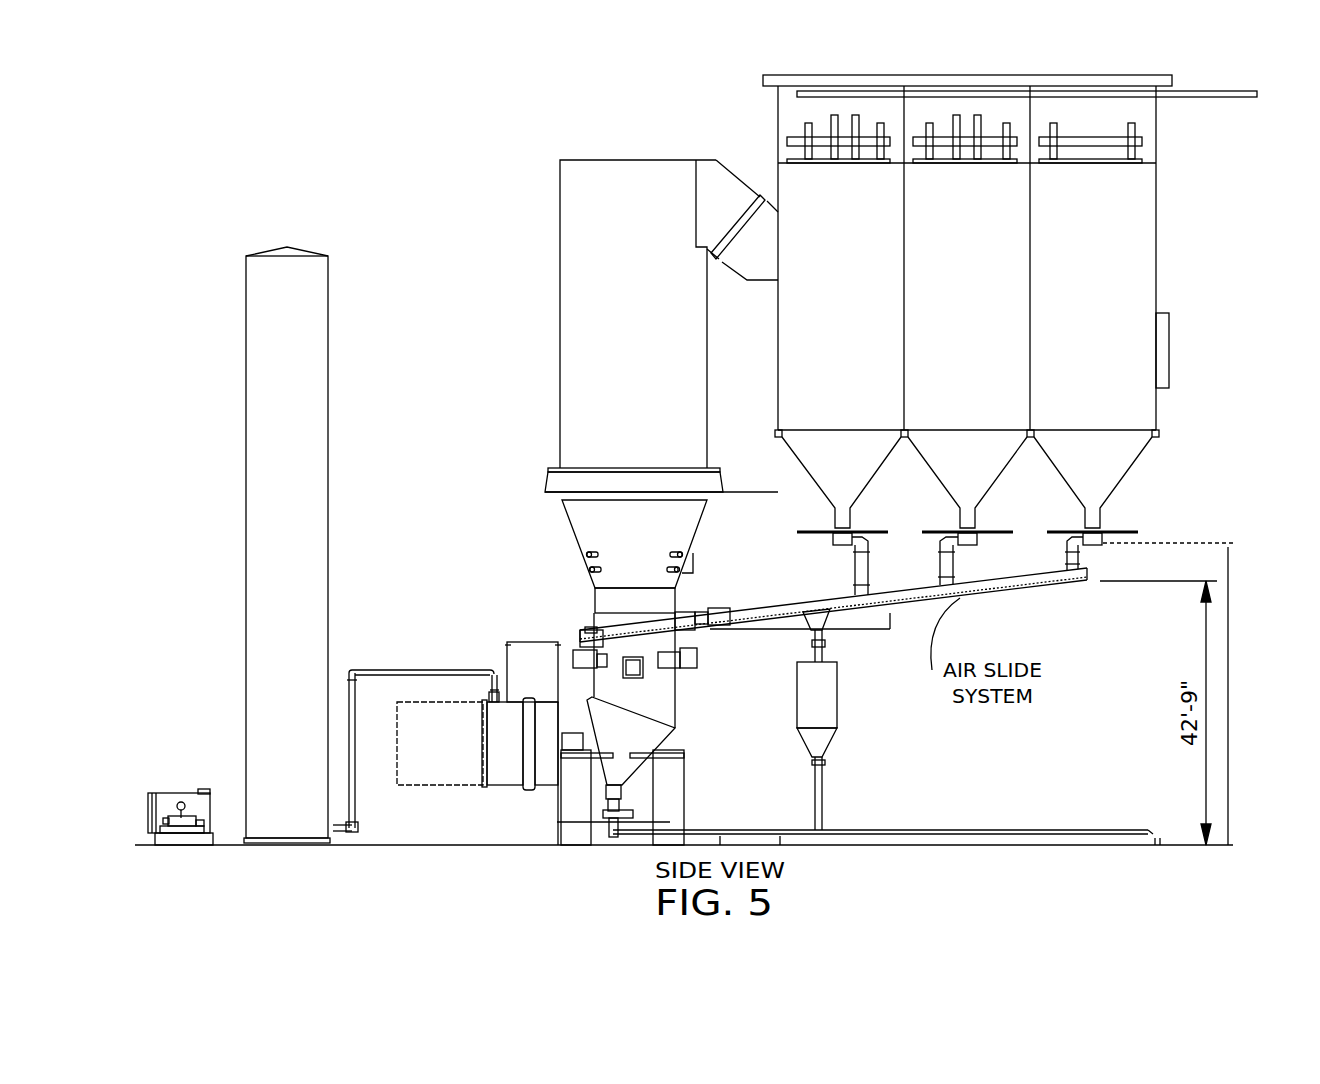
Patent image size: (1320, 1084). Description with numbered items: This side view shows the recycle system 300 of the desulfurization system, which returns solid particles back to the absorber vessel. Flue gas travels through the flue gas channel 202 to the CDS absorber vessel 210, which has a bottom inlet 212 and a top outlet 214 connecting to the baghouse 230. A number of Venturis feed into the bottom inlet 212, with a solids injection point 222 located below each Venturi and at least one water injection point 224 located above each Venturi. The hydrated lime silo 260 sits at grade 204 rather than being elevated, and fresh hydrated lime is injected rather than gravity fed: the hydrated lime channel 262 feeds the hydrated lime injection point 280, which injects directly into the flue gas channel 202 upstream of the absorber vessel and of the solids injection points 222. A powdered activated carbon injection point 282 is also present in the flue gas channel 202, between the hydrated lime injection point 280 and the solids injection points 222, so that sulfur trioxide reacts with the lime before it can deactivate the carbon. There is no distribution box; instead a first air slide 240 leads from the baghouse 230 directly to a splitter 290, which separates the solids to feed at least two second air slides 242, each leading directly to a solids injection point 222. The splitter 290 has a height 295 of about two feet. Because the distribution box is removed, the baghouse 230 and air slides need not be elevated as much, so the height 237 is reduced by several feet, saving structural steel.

The recycle system 300 is at (405, 240).
The hydrated lime silo 260 is at (297, 330).
The grade 204 is at (233, 843).
The hydrated lime channel 262 is at (480, 670).
The hydrated lime injection point 280 is at (493, 700).
The powdered activated carbon (PAC) injection point 282 is at (538, 640).
The flue gas channel 202 is at (428, 770).
The CDS absorber vessel 210 is at (655, 312).
The top outlet 214 is at (712, 190).
The bottom inlet 212 is at (677, 517).
The water injection point 224 is at (693, 553).
The solids injection point 222 is at (593, 632).
The first air slide 240 is at (1037, 585).
The splitter 290 is at (687, 622).
The second air slide 242 is at (677, 670).
The height of splitter 295 is at (890, 629).
The baghouse 230 is at (991, 317).
The height 237 is at (1228, 683).